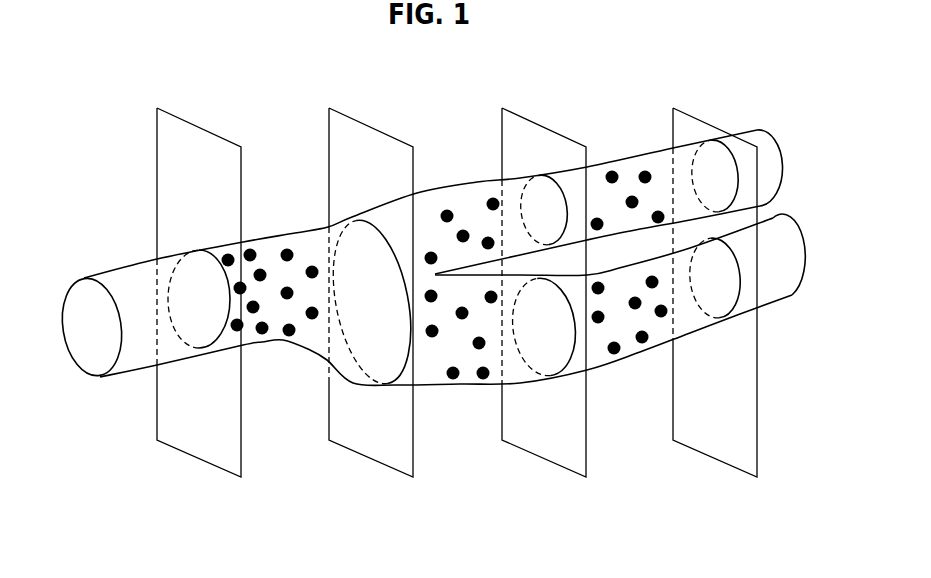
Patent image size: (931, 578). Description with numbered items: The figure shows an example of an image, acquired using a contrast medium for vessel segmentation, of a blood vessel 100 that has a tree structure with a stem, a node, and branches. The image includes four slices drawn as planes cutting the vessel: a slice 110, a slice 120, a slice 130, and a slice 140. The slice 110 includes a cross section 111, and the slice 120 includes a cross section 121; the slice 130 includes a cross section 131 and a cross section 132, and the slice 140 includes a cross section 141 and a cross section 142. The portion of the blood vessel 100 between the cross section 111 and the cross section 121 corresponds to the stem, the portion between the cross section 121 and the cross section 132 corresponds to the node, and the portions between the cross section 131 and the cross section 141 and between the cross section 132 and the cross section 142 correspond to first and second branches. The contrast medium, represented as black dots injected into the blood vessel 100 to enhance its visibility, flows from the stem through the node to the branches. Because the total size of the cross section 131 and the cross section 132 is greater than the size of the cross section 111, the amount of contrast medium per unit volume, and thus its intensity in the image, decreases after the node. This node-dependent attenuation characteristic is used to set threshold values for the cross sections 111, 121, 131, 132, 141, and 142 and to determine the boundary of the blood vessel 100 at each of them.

The blood vessel 100 is at (123, 278).
The slice 110 is at (197, 460).
The cross section 111 is at (222, 340).
The slice 120 is at (368, 460).
The cross section 121 is at (407, 353).
The slice 130 is at (543, 460).
The cross section 131 is at (558, 187).
The cross section 132 is at (575, 330).
The slice 140 is at (713, 460).
The cross section 141 is at (737, 173).
The cross section 142 is at (738, 270).